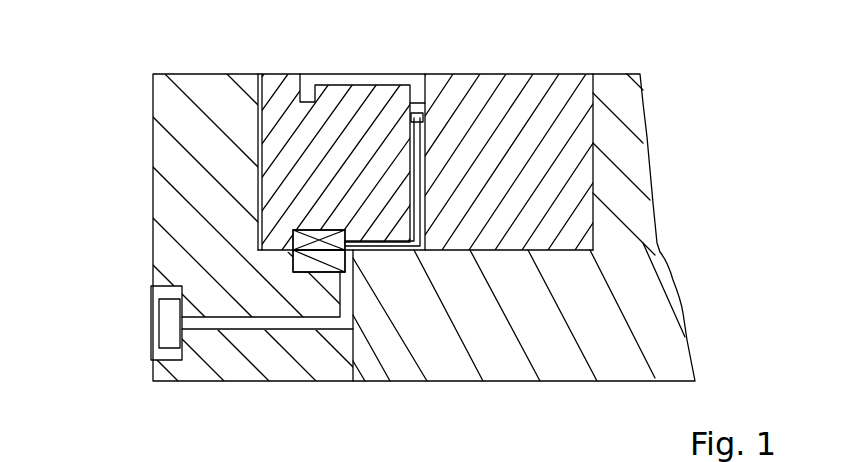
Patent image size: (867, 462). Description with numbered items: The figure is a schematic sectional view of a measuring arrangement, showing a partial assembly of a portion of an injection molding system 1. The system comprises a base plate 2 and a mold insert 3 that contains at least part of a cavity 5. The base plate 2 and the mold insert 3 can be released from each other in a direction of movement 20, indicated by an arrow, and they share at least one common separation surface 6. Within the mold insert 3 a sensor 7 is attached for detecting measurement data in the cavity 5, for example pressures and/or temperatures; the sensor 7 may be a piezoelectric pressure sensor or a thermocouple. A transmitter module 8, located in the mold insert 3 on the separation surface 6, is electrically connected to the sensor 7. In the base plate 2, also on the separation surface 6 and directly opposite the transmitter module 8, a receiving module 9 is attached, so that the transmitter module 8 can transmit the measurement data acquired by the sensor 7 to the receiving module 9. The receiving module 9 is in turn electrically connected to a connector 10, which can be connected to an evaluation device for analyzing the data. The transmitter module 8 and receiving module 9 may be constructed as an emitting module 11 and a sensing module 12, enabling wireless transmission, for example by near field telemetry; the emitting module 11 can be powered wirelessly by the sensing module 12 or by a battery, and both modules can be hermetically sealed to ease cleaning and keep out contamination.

The injection molding system 1 is at (701, 252).
The base plate 2 is at (494, 356).
The mold insert 3 is at (500, 100).
The cavity 5 is at (375, 82).
The separation surface 6 is at (290, 255).
The sensor 7 is at (423, 120).
The transmitter module 8 is at (295, 233).
The receiving module 9 is at (300, 270).
The connector 10 is at (170, 328).
The emitting module 11 is at (204, 222).
The sensing module 12 is at (190, 285).
The direction of movement 20 is at (552, 82).